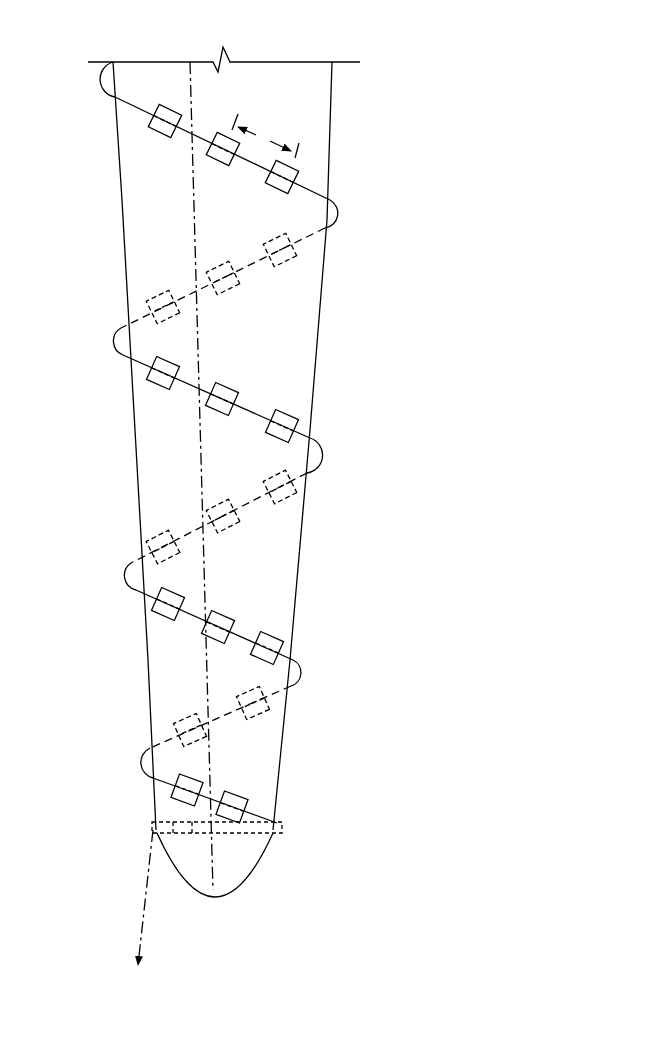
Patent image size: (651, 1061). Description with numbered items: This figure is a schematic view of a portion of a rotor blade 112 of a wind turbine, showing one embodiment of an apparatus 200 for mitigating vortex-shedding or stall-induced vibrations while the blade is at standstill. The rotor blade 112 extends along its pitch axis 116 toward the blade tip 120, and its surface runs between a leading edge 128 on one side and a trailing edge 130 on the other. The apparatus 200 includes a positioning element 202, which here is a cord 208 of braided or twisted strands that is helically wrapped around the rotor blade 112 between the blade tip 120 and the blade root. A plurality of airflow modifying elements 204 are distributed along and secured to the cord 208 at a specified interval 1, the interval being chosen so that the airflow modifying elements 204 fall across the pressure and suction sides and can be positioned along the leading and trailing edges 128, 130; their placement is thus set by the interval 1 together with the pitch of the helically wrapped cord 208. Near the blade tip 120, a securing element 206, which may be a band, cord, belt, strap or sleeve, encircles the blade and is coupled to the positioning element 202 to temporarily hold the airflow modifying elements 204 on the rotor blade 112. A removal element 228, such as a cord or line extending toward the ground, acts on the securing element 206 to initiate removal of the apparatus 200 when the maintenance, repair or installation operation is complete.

The apparatus 200 is at (458, 106).
The rotor blade 112 is at (312, 108).
The pitch axis 116 is at (190, 102).
The leading edge 128 is at (133, 447).
The trailing edge 130 is at (315, 317).
The positioning element 202 is at (320, 448).
The cord 208 is at (219, 442).
The airflow modifying element 204 is at (160, 135).
The sensor spacing 1 is at (265, 136).
The securing element 206 is at (282, 825).
The blade tip 120 is at (247, 889).
The removal element 228 is at (183, 827).